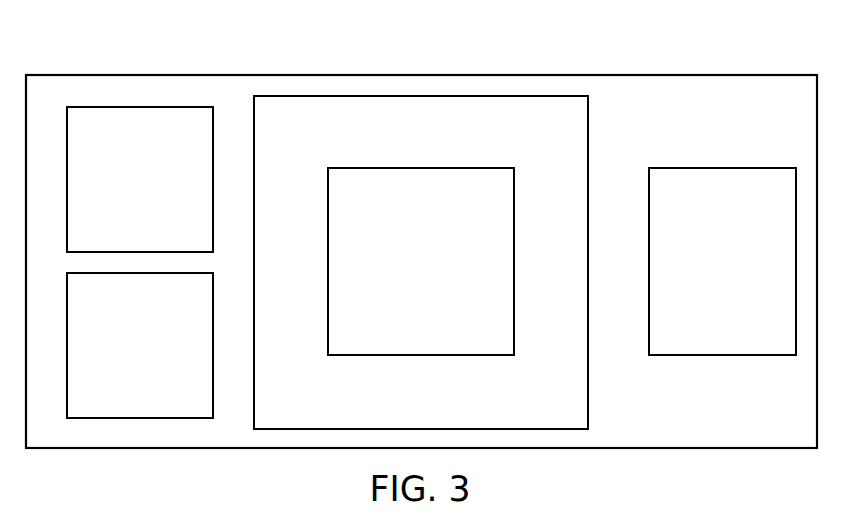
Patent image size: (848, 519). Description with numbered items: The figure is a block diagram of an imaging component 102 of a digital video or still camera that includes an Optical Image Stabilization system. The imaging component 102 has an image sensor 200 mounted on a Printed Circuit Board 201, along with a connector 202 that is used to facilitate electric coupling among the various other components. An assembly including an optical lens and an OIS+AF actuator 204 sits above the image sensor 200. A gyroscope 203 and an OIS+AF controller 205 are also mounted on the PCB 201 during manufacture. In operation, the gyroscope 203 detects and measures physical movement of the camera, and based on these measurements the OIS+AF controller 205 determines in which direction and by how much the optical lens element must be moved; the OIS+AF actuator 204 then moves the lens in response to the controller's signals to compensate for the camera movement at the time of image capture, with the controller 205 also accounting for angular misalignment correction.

The imaging component 102 is at (421, 231).
The Printed Circuit Board (PCB) 201 is at (420, 74).
The gyroscope 203 is at (120, 210).
The OIS+AF controller 205 is at (120, 388).
The OIS+AF actuator 204 is at (515, 145).
The image sensor 200 is at (401, 306).
The connector 202 is at (703, 297).